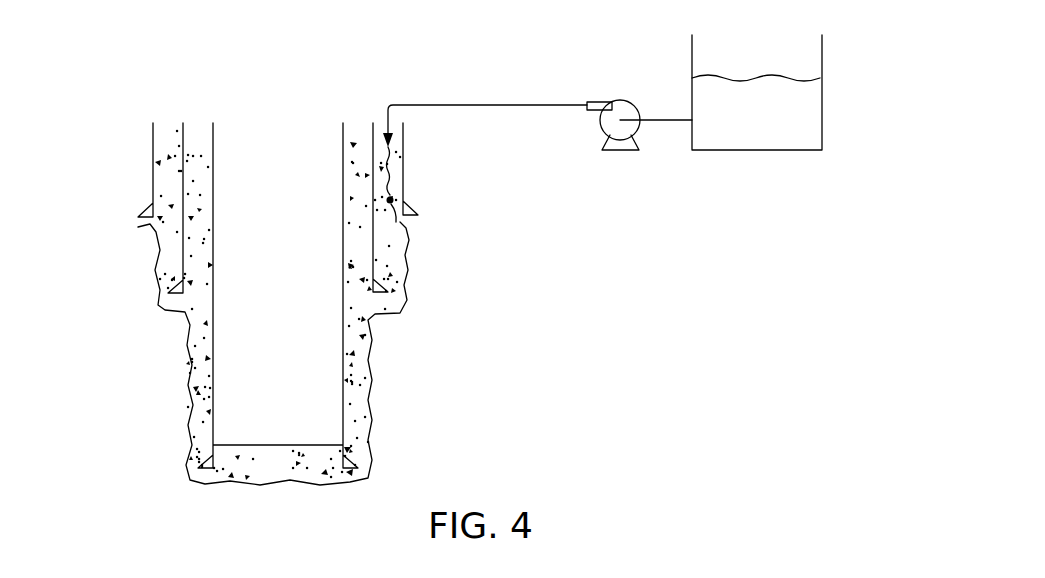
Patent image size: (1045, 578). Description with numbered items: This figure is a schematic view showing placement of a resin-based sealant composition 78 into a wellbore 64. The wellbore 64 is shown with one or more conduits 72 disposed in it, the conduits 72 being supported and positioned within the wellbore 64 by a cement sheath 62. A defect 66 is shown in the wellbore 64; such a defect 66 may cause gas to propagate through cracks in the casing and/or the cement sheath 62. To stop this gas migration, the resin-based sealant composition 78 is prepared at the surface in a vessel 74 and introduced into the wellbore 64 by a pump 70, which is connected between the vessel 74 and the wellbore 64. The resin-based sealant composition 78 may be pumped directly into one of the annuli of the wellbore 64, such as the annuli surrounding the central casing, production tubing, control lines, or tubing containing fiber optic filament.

The cement sheath 62 is at (352, 353).
The wellbore 64 is at (273, 140).
The defect 66 is at (418, 223).
The pump 70 is at (620, 130).
The conduits 72 is at (183, 253).
The vessel 74 is at (824, 57).
The resin-based sealant composition 78 is at (763, 120).